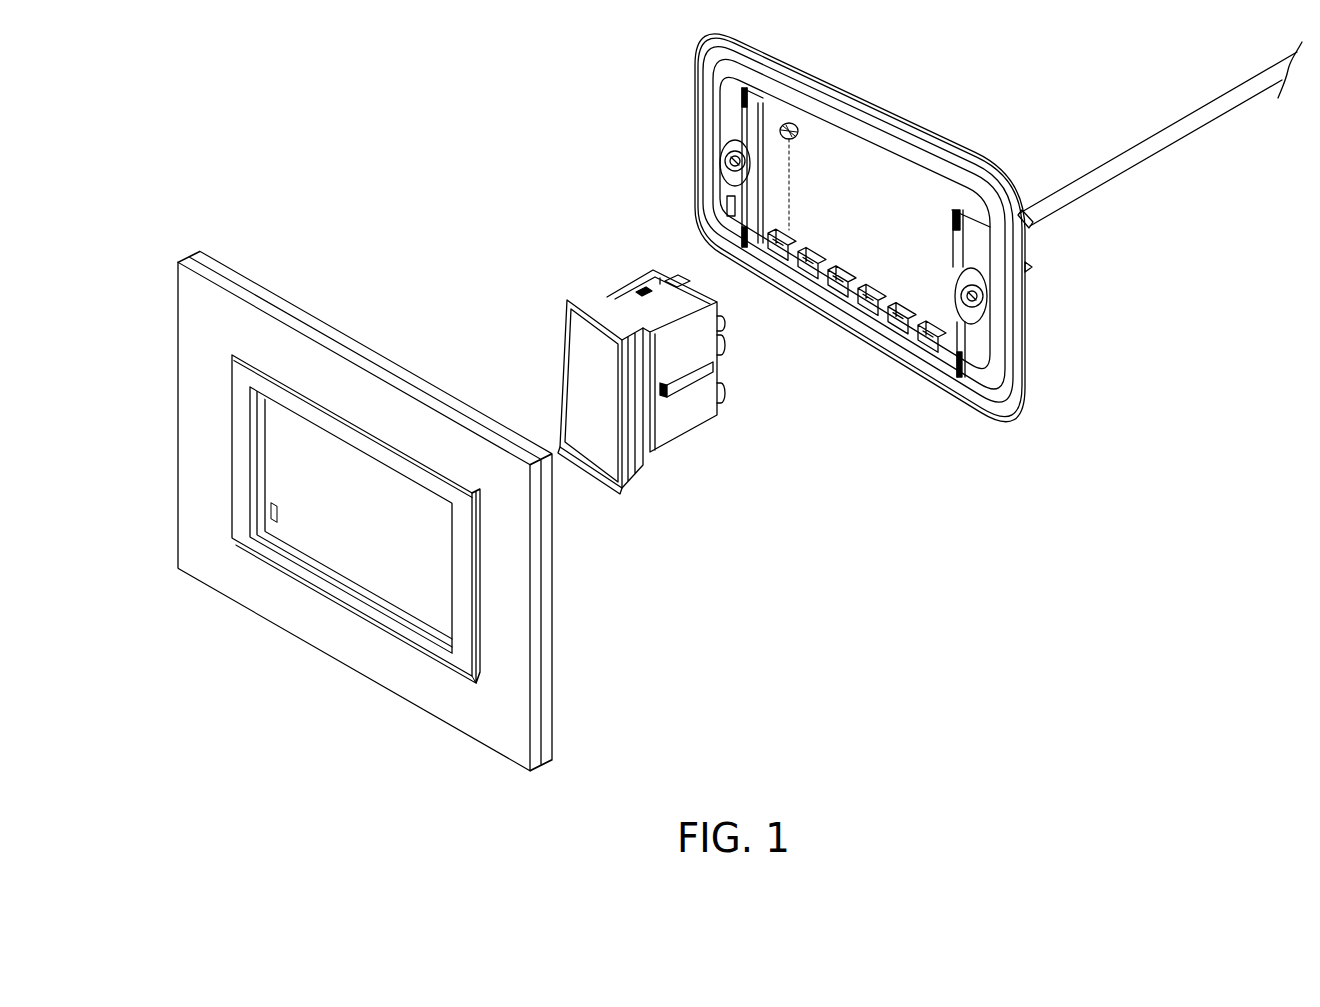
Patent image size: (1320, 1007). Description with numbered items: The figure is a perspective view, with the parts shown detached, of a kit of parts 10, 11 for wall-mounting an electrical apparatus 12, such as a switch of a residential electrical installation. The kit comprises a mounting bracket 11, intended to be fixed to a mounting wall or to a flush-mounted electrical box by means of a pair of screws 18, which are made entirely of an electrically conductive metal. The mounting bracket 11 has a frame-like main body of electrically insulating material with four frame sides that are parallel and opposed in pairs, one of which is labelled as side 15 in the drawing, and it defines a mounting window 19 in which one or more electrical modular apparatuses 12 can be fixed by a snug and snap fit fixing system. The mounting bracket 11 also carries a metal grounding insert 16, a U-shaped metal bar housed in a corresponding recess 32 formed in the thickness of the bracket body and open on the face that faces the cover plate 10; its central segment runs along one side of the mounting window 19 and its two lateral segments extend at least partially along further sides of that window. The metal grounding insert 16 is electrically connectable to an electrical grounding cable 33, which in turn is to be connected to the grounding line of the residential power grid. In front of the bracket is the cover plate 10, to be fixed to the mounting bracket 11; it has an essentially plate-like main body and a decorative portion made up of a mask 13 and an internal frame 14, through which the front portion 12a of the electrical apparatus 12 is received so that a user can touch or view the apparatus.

The cover plate 10 is at (254, 254).
The mounting bracket 11 is at (686, 67).
The electrical apparatus 12 is at (600, 287).
The front portion of the electrical apparatus 12a is at (578, 406).
The mask 13 is at (366, 648).
The internal frame 14 is at (333, 425).
The upper side of the support frame 15 is at (887, 150).
The metal grounding insert 16 is at (958, 388).
The screws 18 is at (735, 160).
The mounting window 19 is at (883, 237).
The recess 32 is at (722, 195).
The electrical grounding cable 33 is at (1073, 183).